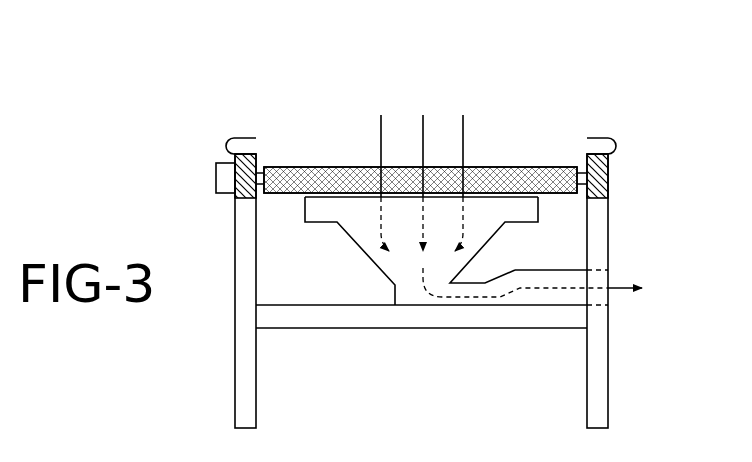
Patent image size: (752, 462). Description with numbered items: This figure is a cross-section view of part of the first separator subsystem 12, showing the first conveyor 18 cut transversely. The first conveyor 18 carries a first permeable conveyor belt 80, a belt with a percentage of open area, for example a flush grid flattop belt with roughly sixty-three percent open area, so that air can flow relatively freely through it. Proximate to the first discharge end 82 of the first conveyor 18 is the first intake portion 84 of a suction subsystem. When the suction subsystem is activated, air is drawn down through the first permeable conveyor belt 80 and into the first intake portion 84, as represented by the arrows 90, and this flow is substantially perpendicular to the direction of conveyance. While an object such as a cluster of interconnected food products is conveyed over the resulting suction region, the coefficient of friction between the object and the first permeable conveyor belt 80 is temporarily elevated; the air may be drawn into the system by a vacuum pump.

The first separator subsystem 12 is at (146, 110).
The first conveyor 18 is at (540, 196).
The first permeable conveyor belt 80 is at (552, 178).
The first discharge end 82 is at (318, 177).
The first intake portion 84 is at (506, 196).
The arrows 90 is at (463, 128).